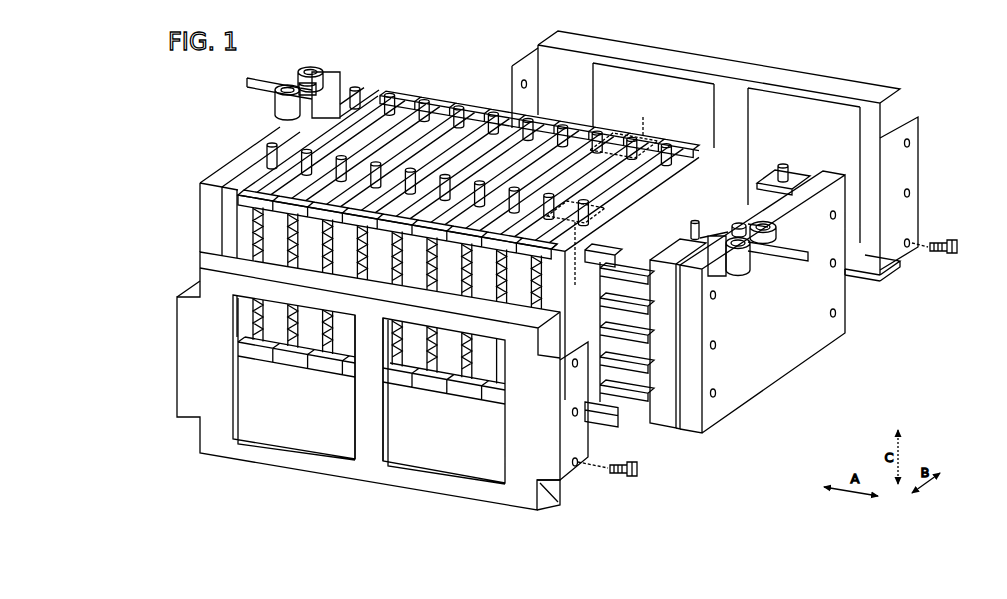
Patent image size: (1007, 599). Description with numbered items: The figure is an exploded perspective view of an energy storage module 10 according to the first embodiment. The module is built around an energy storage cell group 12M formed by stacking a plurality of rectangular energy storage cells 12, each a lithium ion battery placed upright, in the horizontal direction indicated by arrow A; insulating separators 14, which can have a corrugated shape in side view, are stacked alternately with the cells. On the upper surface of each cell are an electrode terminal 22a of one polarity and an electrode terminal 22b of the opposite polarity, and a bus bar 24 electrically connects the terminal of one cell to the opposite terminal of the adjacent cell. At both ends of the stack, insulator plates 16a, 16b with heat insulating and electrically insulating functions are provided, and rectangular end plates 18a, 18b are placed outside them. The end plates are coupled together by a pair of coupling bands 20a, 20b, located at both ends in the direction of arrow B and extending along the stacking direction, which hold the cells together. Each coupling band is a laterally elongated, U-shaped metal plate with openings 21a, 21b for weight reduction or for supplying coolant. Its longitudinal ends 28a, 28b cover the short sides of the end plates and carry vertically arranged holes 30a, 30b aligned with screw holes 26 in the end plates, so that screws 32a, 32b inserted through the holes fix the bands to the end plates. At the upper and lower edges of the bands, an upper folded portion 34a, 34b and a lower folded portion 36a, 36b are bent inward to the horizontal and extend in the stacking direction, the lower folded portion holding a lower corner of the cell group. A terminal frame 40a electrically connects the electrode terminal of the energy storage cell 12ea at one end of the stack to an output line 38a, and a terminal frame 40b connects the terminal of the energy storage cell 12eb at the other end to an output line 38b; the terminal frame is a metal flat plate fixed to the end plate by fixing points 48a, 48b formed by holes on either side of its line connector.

The energy storage module 10 is at (184, 77).
The energy storage cell 12 is at (473, 146).
The energy storage cell group 12M is at (468, 220).
The energy storage cell 12ea is at (658, 413).
The energy storage cell 12eb is at (247, 243).
The separator 14 is at (537, 282).
The insulator plate 16a is at (678, 434).
The insulator plate 16b is at (217, 227).
The end plate 18a is at (717, 435).
The end plate 18b is at (240, 157).
The coupling band 20a is at (248, 457).
The coupling band 20b is at (838, 62).
The opening 21a is at (240, 373).
The opening 21b is at (593, 68).
The electrode terminal 22a is at (668, 145).
The electrode terminal 22b is at (355, 88).
The bus bar 24 is at (602, 200).
The screw hole 26 is at (832, 267).
The end 28a is at (192, 291).
The end 28b is at (522, 82).
The hole 30a is at (574, 460).
The hole 30b is at (906, 250).
The screw 32a is at (632, 480).
The screw 32b is at (950, 258).
The upper folded portion 34a is at (378, 290).
The upper folded portion 34b is at (800, 78).
The lower folded portion 36a is at (548, 490).
The lower folded portion 36b is at (882, 282).
The output line 38a is at (788, 262).
The output line 38b is at (268, 84).
The terminal frame 40a is at (727, 258).
The terminal frame 40b is at (331, 80).
The fixing point 48a is at (743, 277).
The fixing point 48b is at (777, 235).